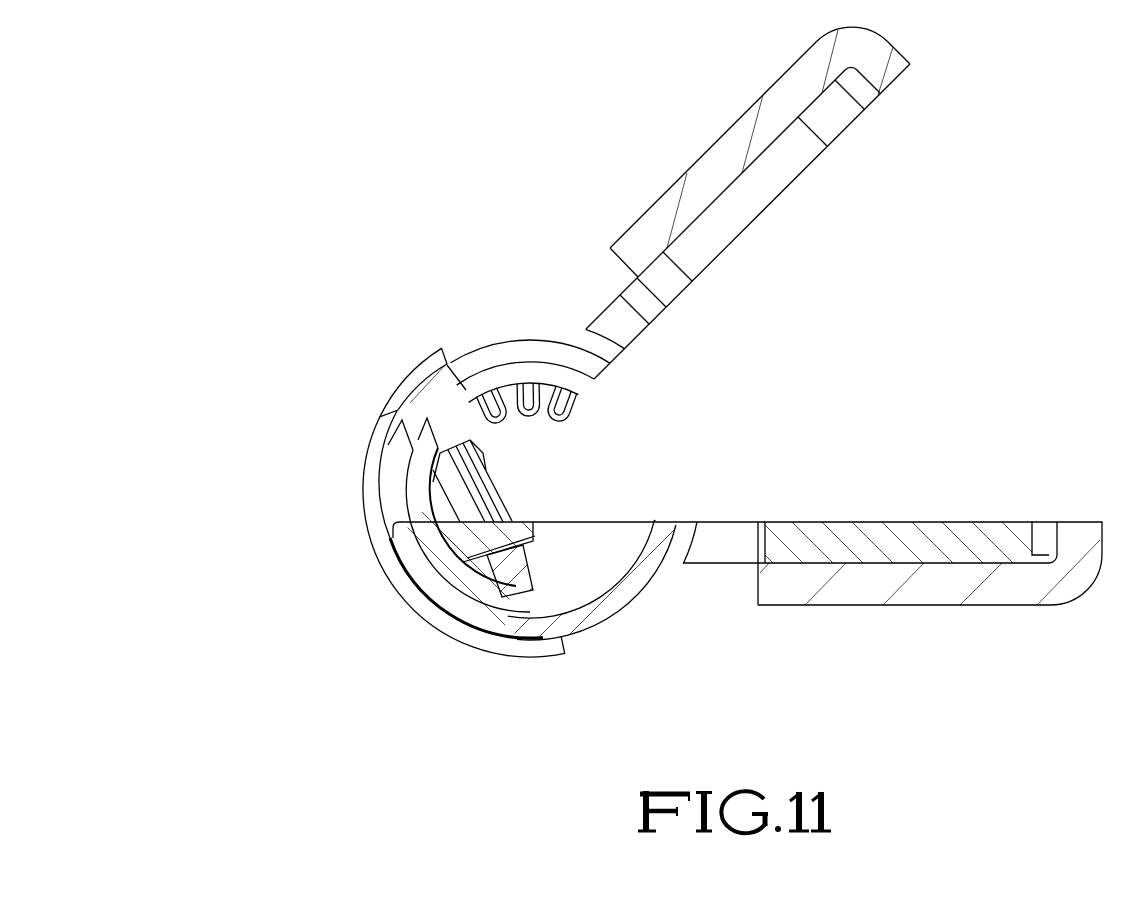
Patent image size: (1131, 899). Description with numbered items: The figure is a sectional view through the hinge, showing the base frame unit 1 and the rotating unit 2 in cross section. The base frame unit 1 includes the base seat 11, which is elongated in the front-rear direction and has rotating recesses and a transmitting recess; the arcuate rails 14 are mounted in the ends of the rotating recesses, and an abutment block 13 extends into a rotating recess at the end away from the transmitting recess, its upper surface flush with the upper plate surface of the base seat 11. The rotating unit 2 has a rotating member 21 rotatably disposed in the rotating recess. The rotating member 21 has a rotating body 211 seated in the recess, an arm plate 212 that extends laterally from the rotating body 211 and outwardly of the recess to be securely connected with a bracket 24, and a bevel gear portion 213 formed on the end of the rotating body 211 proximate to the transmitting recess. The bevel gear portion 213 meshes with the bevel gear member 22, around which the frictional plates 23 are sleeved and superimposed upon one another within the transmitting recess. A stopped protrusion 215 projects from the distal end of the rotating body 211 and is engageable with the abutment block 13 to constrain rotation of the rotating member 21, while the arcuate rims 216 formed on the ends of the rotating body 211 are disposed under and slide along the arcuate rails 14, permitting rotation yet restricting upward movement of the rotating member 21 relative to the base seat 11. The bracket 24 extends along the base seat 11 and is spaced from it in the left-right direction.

The base frame unit 1 is at (427, 522).
The base seat 11 is at (432, 627).
The abutment block 13 is at (515, 583).
The arcuate rail 14 is at (422, 435).
The rotating unit 2 is at (777, 374).
The rotating member 21 is at (777, 374).
The rotating body 211 is at (578, 388).
The arm plate 212 is at (757, 201).
The bevel gear portion 213 is at (520, 438).
The stopped protrusion 215 is at (467, 545).
The arcuate rim 216 is at (513, 351).
The bevel gear member 22 is at (432, 497).
The frictional plate 23 is at (480, 508).
The bracket 24 is at (700, 156).